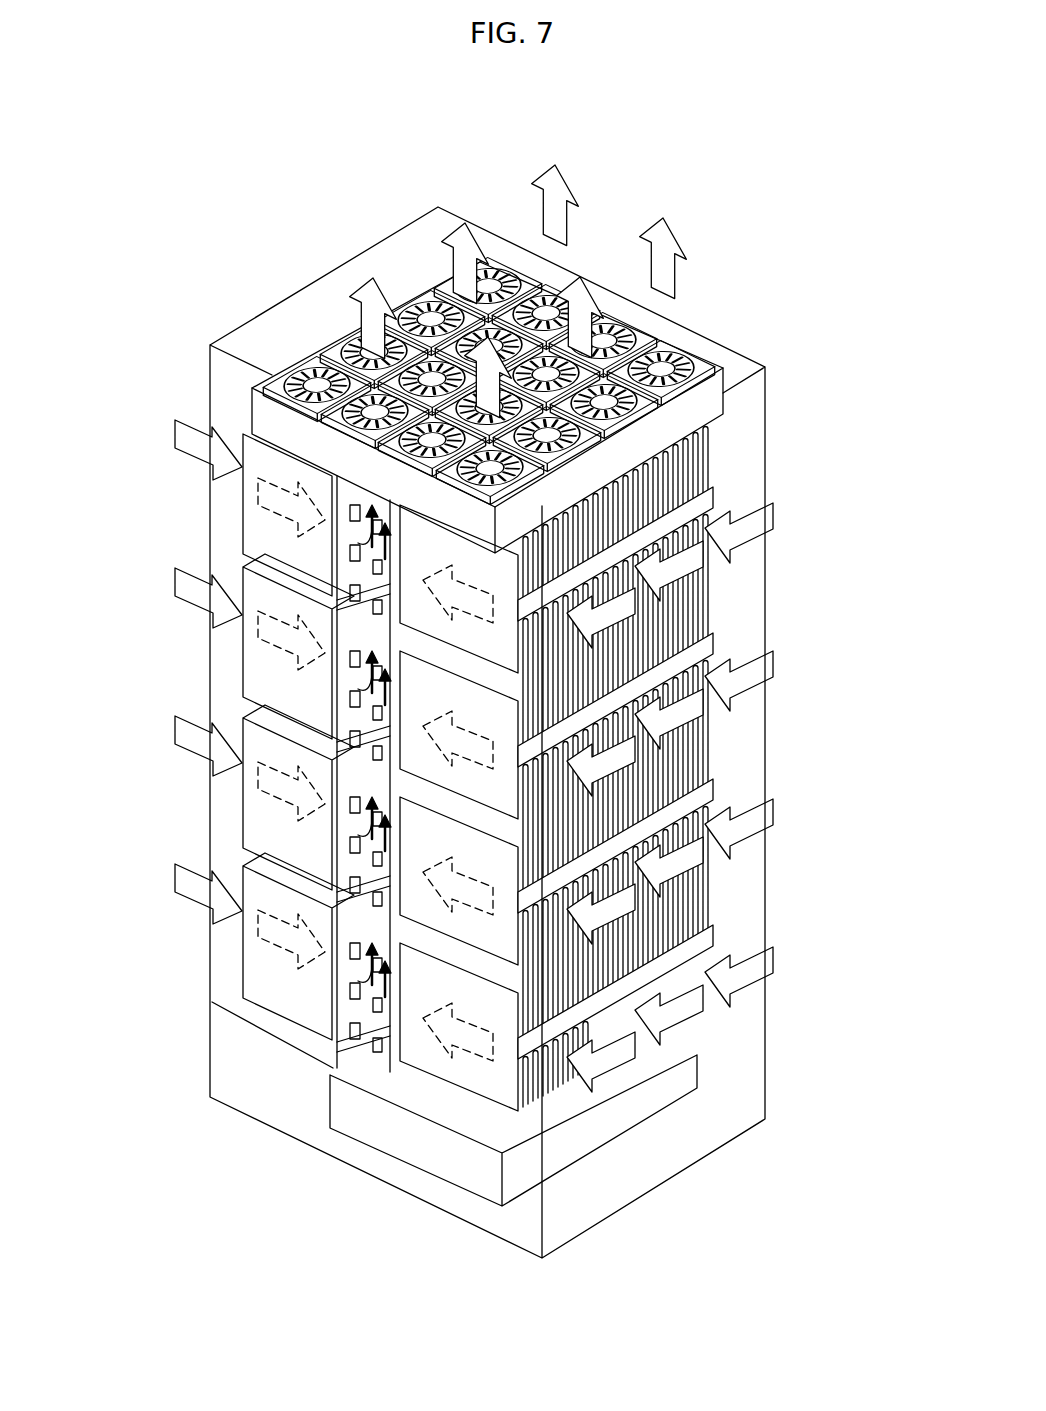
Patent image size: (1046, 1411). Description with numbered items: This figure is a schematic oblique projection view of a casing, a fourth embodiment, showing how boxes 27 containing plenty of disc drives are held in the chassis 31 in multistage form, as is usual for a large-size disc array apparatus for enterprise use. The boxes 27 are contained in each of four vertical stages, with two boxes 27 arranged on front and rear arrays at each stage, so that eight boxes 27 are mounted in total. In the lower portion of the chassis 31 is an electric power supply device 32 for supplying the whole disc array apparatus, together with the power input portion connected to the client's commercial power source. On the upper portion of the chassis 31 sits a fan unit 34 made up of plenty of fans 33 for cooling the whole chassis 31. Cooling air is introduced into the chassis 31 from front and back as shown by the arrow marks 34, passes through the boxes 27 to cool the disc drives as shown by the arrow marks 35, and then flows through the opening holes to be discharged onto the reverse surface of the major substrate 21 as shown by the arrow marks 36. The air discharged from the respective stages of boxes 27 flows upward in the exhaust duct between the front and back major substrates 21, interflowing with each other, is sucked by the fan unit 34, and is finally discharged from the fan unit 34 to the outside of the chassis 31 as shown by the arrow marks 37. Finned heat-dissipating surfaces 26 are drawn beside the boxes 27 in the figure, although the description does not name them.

The major substrate 21 is at (372, 992).
The heat sink fins 26 is at (695, 917).
The box 27 is at (255, 822).
The chassis 31 is at (772, 421).
The electric power supply device 32 is at (442, 1160).
The fan 33 is at (706, 386).
The fan unit 34 is at (735, 372).
The arrow mark 35 is at (282, 655).
The arrow mark 36 is at (365, 522).
The arrow mark 37 is at (565, 183).